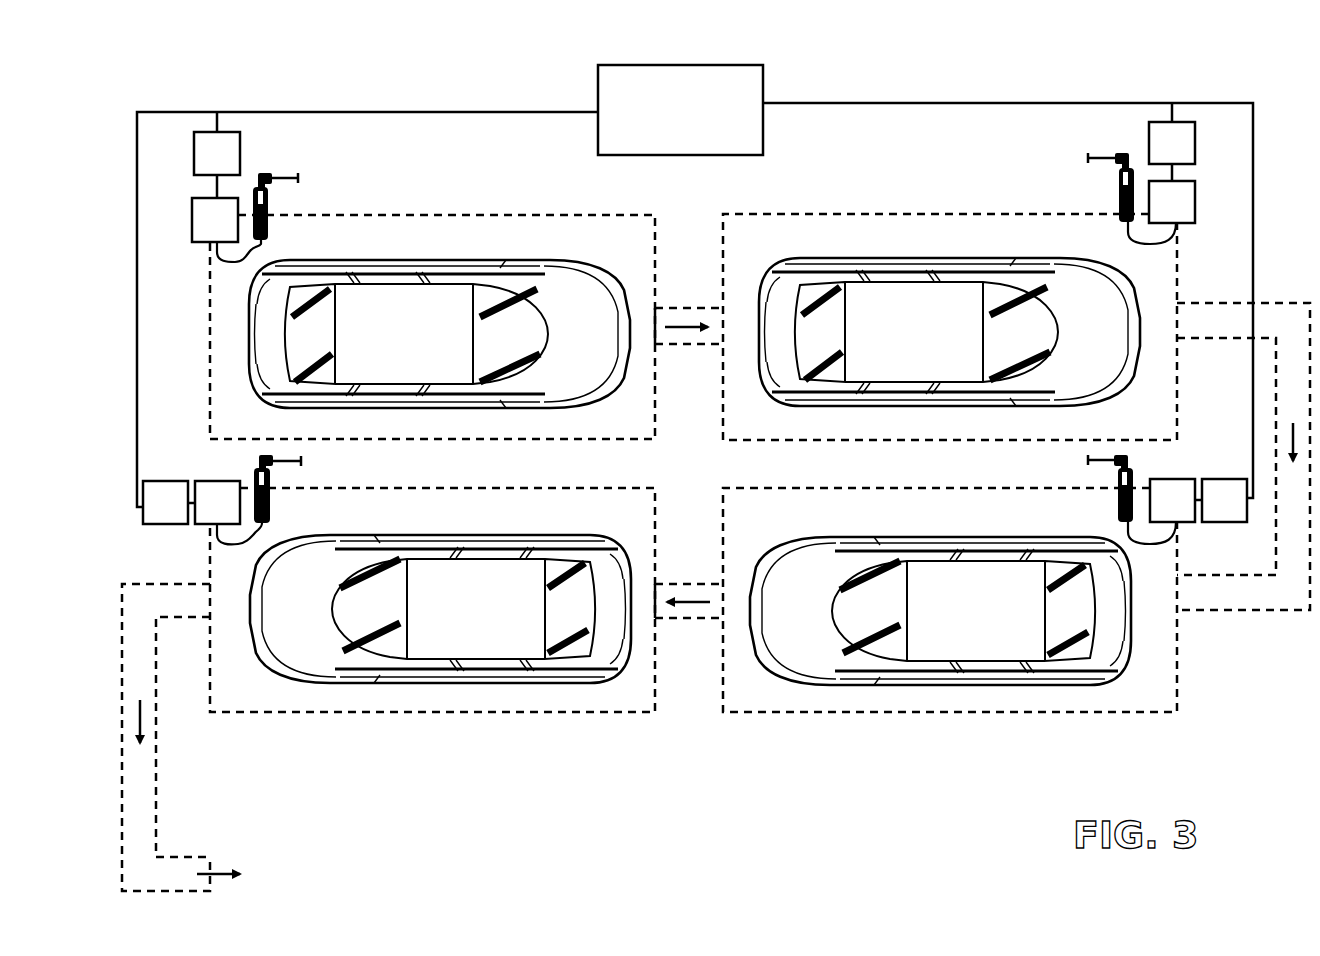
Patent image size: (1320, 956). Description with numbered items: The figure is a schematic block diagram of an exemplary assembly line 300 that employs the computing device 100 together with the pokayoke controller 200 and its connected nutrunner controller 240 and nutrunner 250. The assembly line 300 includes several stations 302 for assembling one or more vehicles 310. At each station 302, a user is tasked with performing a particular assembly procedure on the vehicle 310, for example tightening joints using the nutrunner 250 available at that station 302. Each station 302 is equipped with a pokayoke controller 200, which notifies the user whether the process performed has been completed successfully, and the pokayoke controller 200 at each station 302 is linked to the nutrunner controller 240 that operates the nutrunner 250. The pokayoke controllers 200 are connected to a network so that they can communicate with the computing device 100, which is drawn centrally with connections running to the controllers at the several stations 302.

The computing device 100 is at (680, 110).
The pokayoke controller 200 is at (695, 323).
The nutrunner controller 240 is at (693, 352).
The nutrunner 250 is at (268, 232).
The assembly line 300 is at (810, 796).
The station 302 is at (693, 463).
The vehicle 310 is at (694, 471).